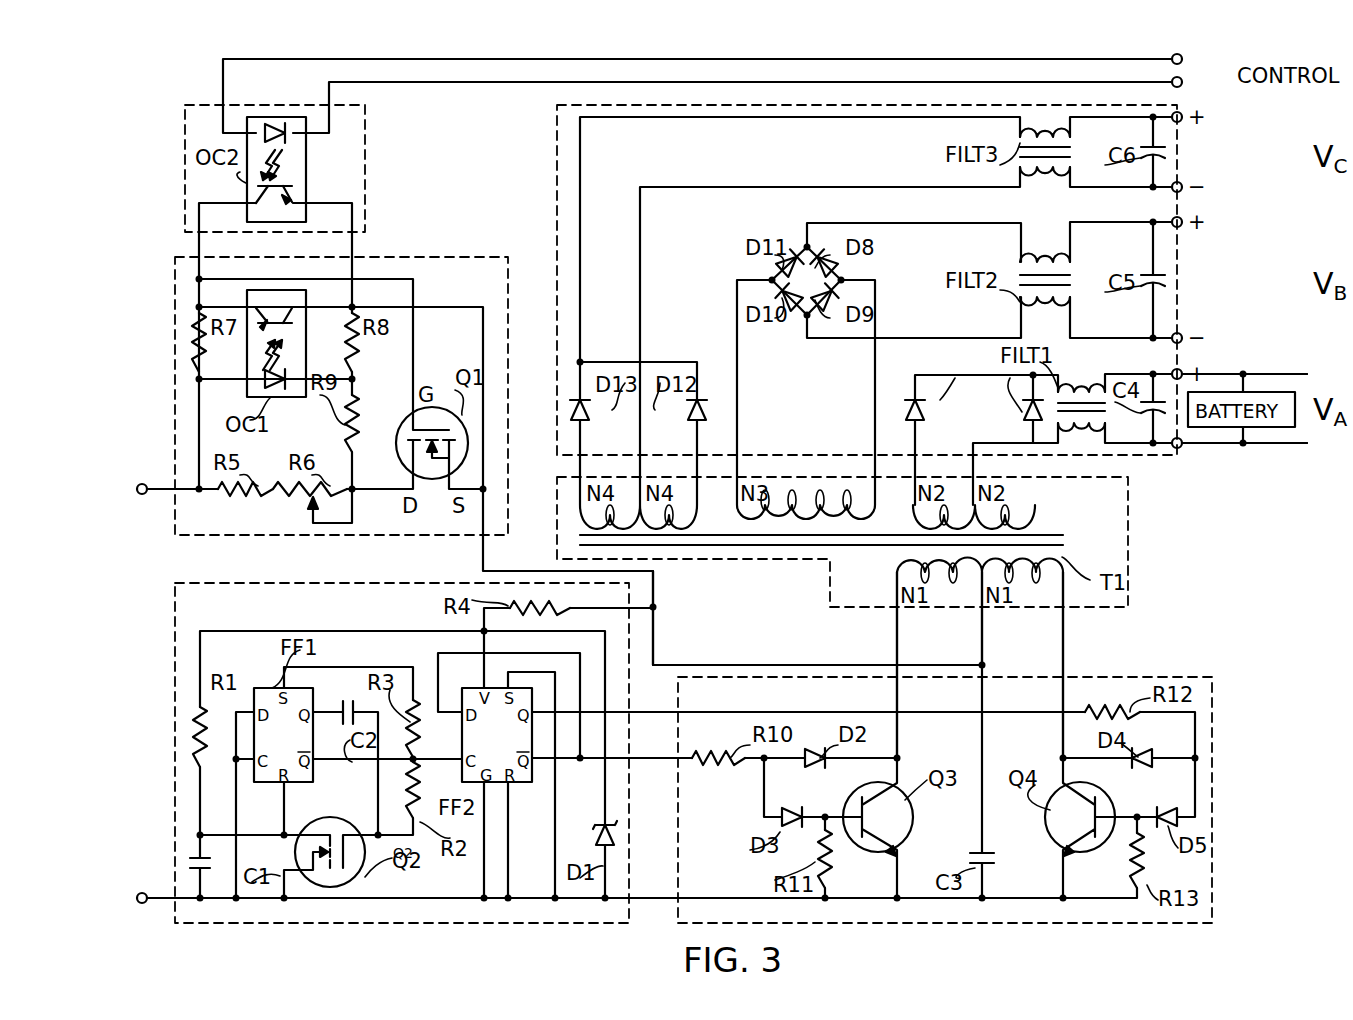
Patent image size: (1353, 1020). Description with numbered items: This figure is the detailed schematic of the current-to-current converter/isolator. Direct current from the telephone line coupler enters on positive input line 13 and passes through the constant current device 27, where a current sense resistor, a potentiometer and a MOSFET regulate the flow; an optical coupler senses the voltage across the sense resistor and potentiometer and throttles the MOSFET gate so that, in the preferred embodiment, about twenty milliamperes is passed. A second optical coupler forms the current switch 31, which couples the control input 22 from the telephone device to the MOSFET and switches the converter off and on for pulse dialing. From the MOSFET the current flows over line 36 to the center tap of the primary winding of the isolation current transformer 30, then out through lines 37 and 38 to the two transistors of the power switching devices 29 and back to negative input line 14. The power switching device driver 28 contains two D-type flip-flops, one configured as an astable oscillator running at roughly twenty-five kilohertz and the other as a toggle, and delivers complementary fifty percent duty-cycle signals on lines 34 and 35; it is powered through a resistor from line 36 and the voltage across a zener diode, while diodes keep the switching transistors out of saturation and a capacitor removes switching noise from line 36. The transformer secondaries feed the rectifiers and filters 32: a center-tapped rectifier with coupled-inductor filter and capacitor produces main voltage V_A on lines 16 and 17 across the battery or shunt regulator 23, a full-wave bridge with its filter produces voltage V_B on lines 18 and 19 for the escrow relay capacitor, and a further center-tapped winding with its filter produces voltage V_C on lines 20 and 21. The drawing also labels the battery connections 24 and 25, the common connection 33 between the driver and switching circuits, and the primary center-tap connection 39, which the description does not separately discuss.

The line 13 is at (146, 484).
The line 14 is at (146, 893).
The line 16 is at (1178, 450).
The line 17 is at (1183, 370).
The line 18 is at (1182, 336).
The line 19 is at (1183, 227).
The line 20 is at (1183, 187).
The line 21 is at (1183, 119).
The control input 22 is at (1194, 68).
The battery or shunt regulator 23 is at (1216, 446).
The battery positive lead 24 is at (1245, 385).
The battery lead 25 is at (1256, 446).
The constant current device 27 is at (400, 257).
The power switching device driver 28 is at (305, 583).
The power switching devices 29 is at (1213, 787).
The isolation current transformer 30 is at (1129, 555).
The current switch 31 is at (366, 190).
The rectifiers and filters 32 is at (557, 250).
The ground line 33 is at (653, 896).
The line 34 is at (655, 762).
The line 35 is at (665, 715).
The line 36 is at (658, 655).
The line 37 is at (893, 655).
The line 38 is at (1060, 652).
The primary center tap lead 39 is at (980, 650).